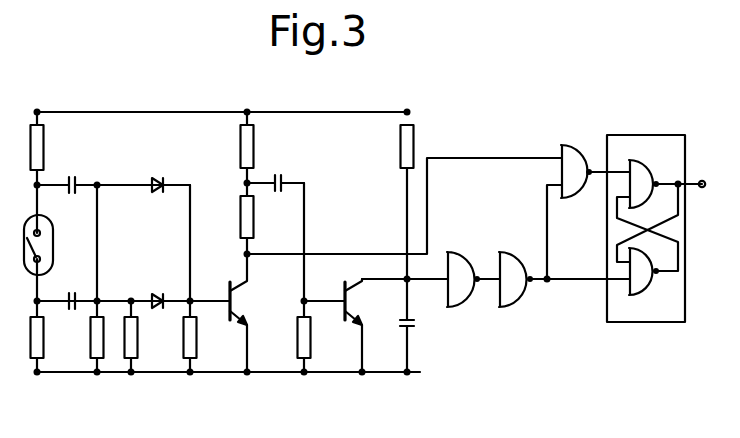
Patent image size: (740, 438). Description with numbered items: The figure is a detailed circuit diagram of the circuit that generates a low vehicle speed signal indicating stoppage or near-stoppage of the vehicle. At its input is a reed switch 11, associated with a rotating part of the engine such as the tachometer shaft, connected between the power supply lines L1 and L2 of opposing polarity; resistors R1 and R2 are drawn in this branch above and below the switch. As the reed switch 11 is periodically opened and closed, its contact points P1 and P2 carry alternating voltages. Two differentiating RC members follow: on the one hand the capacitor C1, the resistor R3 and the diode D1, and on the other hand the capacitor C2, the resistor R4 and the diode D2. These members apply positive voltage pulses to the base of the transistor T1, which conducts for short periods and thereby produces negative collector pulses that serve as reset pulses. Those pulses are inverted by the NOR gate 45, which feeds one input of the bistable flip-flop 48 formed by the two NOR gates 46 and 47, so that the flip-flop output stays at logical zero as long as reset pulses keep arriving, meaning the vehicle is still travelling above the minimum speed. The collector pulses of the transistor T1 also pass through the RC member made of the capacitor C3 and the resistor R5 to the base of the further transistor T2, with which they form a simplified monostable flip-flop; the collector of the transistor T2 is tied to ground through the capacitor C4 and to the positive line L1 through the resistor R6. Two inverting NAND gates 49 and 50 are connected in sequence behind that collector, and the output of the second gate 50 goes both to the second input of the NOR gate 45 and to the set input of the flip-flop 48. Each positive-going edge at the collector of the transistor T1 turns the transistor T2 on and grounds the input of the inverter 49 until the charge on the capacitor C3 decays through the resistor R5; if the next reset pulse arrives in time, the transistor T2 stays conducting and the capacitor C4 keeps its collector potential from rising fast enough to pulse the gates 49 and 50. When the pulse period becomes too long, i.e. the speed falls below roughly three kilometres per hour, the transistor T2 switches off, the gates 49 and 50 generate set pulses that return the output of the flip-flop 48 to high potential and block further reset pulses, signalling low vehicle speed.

The power supply line L1 is at (175, 112).
The power supply line L2 is at (222, 372).
The resistor R1 is at (40, 150).
The resistor R2 is at (42, 338).
The resistor R3 is at (100, 345).
The resistor R4 is at (133, 345).
The resistor R5 is at (306, 345).
The resistor R6 is at (410, 145).
The capacitor C1 is at (71, 183).
The capacitor C2 is at (72, 303).
The capacitor C3 is at (282, 182).
The capacitor C4 is at (416, 322).
The diode D1 is at (158, 180).
The diode D2 is at (157, 296).
The contact point P1 is at (38, 233).
The contact point P2 is at (45, 259).
The reed switch 11 is at (48, 253).
The transistor T1 is at (240, 301).
The transistor T2 is at (355, 301).
The NOR gate 45 is at (572, 168).
The NOR gate 46 is at (645, 181).
The NOR gate 47 is at (642, 284).
The bistable flip-flop 48 is at (630, 310).
The inverting NAND gate 49 is at (455, 262).
The inverting NAND gate 50 is at (505, 262).